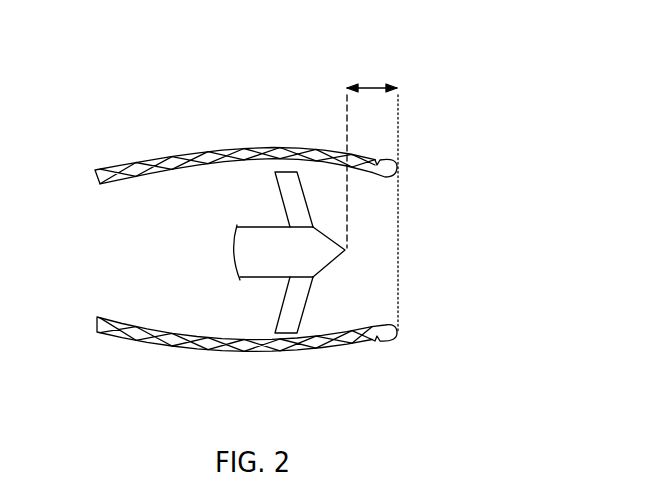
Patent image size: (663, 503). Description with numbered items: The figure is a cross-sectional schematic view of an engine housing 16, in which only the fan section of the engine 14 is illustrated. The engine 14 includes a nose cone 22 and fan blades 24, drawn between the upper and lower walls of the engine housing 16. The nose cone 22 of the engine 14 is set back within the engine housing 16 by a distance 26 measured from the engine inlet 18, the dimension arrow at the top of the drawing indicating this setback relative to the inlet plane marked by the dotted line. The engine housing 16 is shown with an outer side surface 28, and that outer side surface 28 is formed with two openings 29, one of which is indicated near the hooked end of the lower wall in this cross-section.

The engine 14 is at (206, 261).
The engine housing 16 is at (120, 338).
The engine inlet 18 is at (425, 246).
The nose cone 22 is at (345, 252).
The fan blades 24 is at (284, 309).
The distance 26 is at (372, 88).
The outer side surface 28 is at (325, 353).
The openings 29 is at (373, 345).